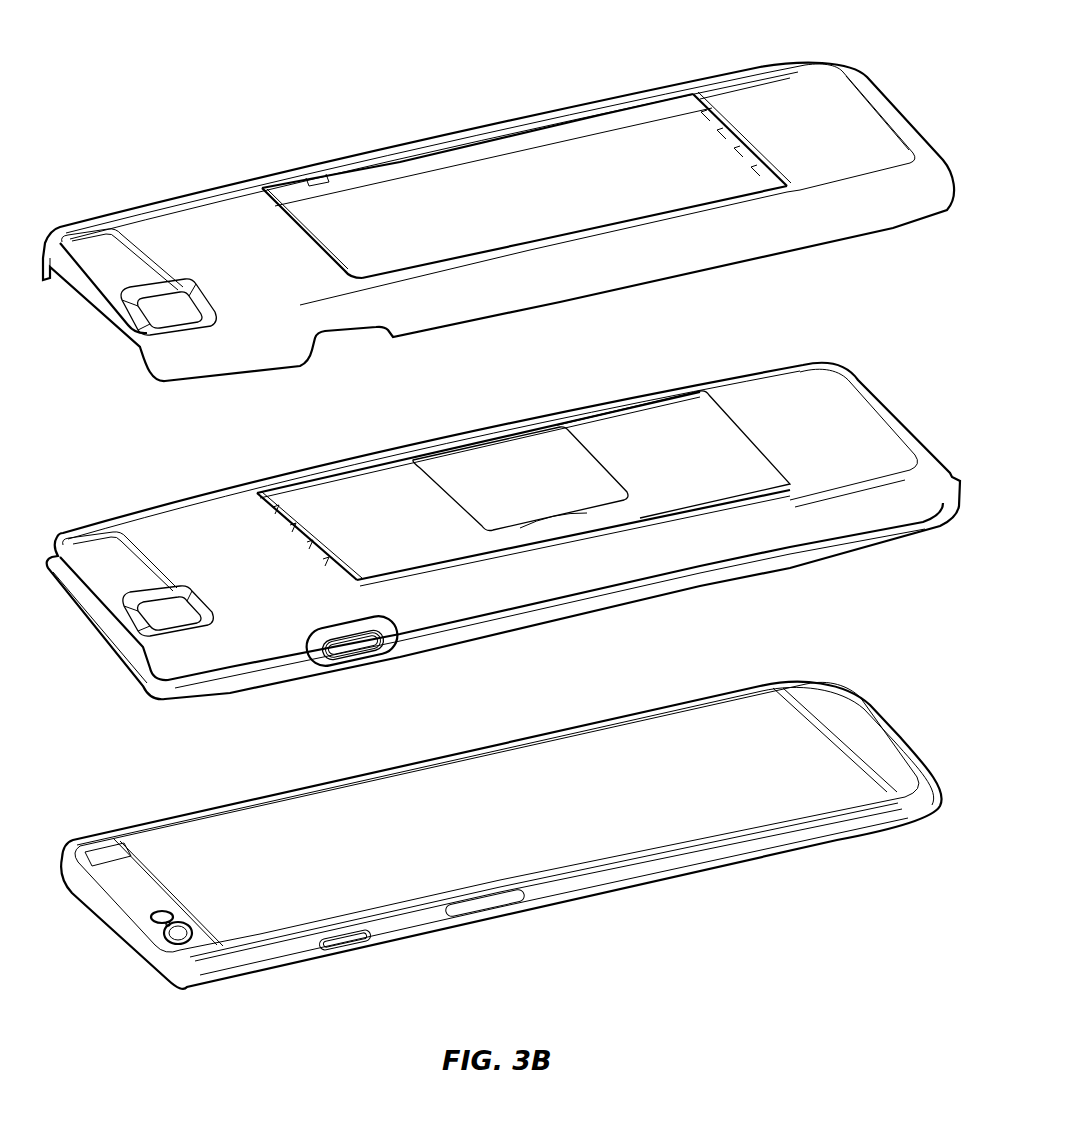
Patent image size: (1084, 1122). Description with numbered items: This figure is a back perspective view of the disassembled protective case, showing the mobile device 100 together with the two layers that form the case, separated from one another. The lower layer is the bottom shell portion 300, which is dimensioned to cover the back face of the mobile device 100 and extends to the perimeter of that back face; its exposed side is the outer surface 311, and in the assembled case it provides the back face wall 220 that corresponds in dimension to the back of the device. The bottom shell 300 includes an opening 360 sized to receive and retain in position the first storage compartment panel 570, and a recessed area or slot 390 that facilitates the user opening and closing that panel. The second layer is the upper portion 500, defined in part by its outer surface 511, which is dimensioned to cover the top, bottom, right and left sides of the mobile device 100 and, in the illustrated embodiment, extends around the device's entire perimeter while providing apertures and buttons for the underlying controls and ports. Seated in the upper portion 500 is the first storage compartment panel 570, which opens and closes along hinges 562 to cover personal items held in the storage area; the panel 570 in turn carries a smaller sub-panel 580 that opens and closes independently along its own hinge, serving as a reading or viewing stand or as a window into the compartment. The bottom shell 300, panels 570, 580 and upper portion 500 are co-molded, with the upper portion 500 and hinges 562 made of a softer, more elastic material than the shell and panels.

The mobile device 100 is at (520, 824).
The back face wall 220 is at (185, 228).
The bottom shell portion 300 is at (498, 190).
The outer surface of bottom shell 311 is at (868, 150).
The opening 360 is at (430, 195).
The recessed area or slot 390 is at (580, 232).
The upper portion 500 is at (504, 502).
The outer surface of upper portion 511 is at (883, 453).
The hinges 562 is at (340, 470).
The first storage compartment panel 570 is at (655, 450).
The sub-panel 580 is at (495, 473).